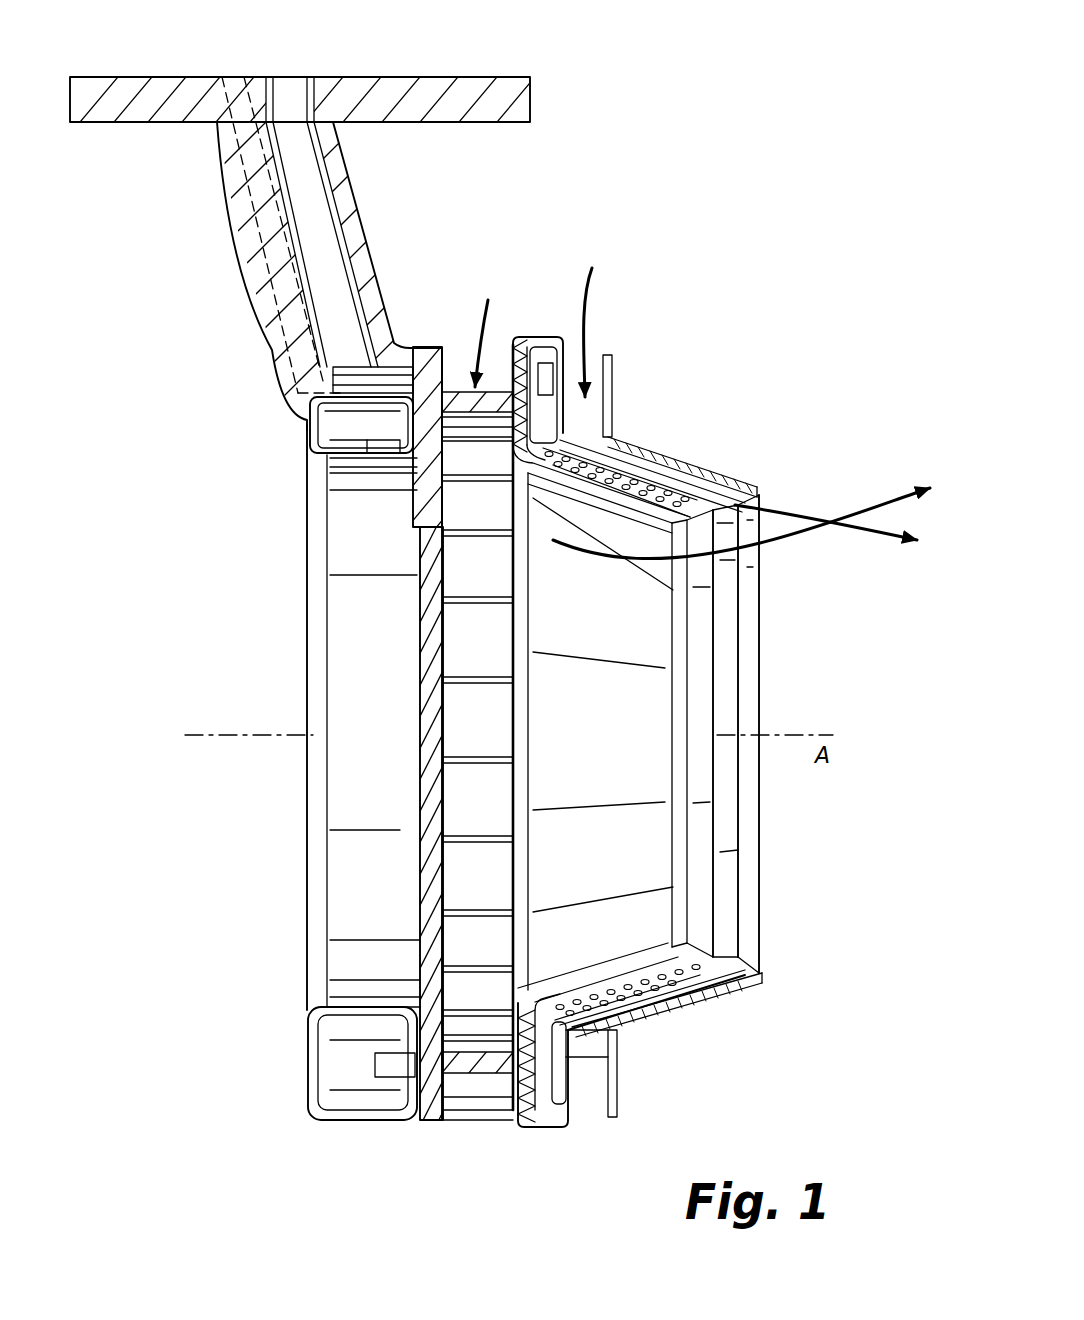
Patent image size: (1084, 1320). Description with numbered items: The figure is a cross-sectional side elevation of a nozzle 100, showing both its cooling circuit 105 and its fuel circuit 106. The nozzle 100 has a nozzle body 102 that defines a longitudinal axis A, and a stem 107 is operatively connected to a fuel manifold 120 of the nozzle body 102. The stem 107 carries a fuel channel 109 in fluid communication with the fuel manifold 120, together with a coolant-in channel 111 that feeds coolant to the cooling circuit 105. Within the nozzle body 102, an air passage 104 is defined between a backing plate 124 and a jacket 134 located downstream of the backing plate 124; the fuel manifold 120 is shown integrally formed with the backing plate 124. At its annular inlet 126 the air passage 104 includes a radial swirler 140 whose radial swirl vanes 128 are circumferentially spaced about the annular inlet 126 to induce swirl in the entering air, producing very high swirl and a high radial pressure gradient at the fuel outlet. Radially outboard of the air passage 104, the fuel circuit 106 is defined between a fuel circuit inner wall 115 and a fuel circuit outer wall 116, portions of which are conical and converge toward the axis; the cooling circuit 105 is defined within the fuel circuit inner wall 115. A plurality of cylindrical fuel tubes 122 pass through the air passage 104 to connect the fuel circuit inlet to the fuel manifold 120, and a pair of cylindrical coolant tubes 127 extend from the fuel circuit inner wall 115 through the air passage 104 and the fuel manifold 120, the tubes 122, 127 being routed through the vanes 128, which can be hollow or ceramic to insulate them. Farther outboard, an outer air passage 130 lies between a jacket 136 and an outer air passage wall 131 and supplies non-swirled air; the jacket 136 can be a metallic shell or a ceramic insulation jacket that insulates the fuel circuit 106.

The nozzle 100 is at (775, 183).
The nozzle body 102 is at (307, 600).
The air passage 104 is at (465, 340).
The cooling circuit 105 is at (657, 945).
The fuel circuit 106 is at (647, 465).
The stem 107 is at (228, 238).
The fuel channel 109 is at (318, 225).
The coolant-in channel 111 is at (239, 95).
The fuel circuit inner wall 115 is at (628, 975).
The fuel circuit outer wall 116 is at (745, 940).
The fuel manifold 120 is at (343, 430).
The fuel tubes 122 is at (387, 1067).
The backing plate 124 is at (430, 810).
The annular inlet 126 is at (452, 362).
The coolant tubes 127 is at (353, 335).
The radial swirl vanes 128 is at (460, 1113).
The outer air passage 130 is at (588, 352).
The outer air passage wall 131 is at (617, 375).
The jacket 134 is at (562, 872).
The jacket 136 is at (683, 490).
The radial swirler 140 is at (487, 1117).